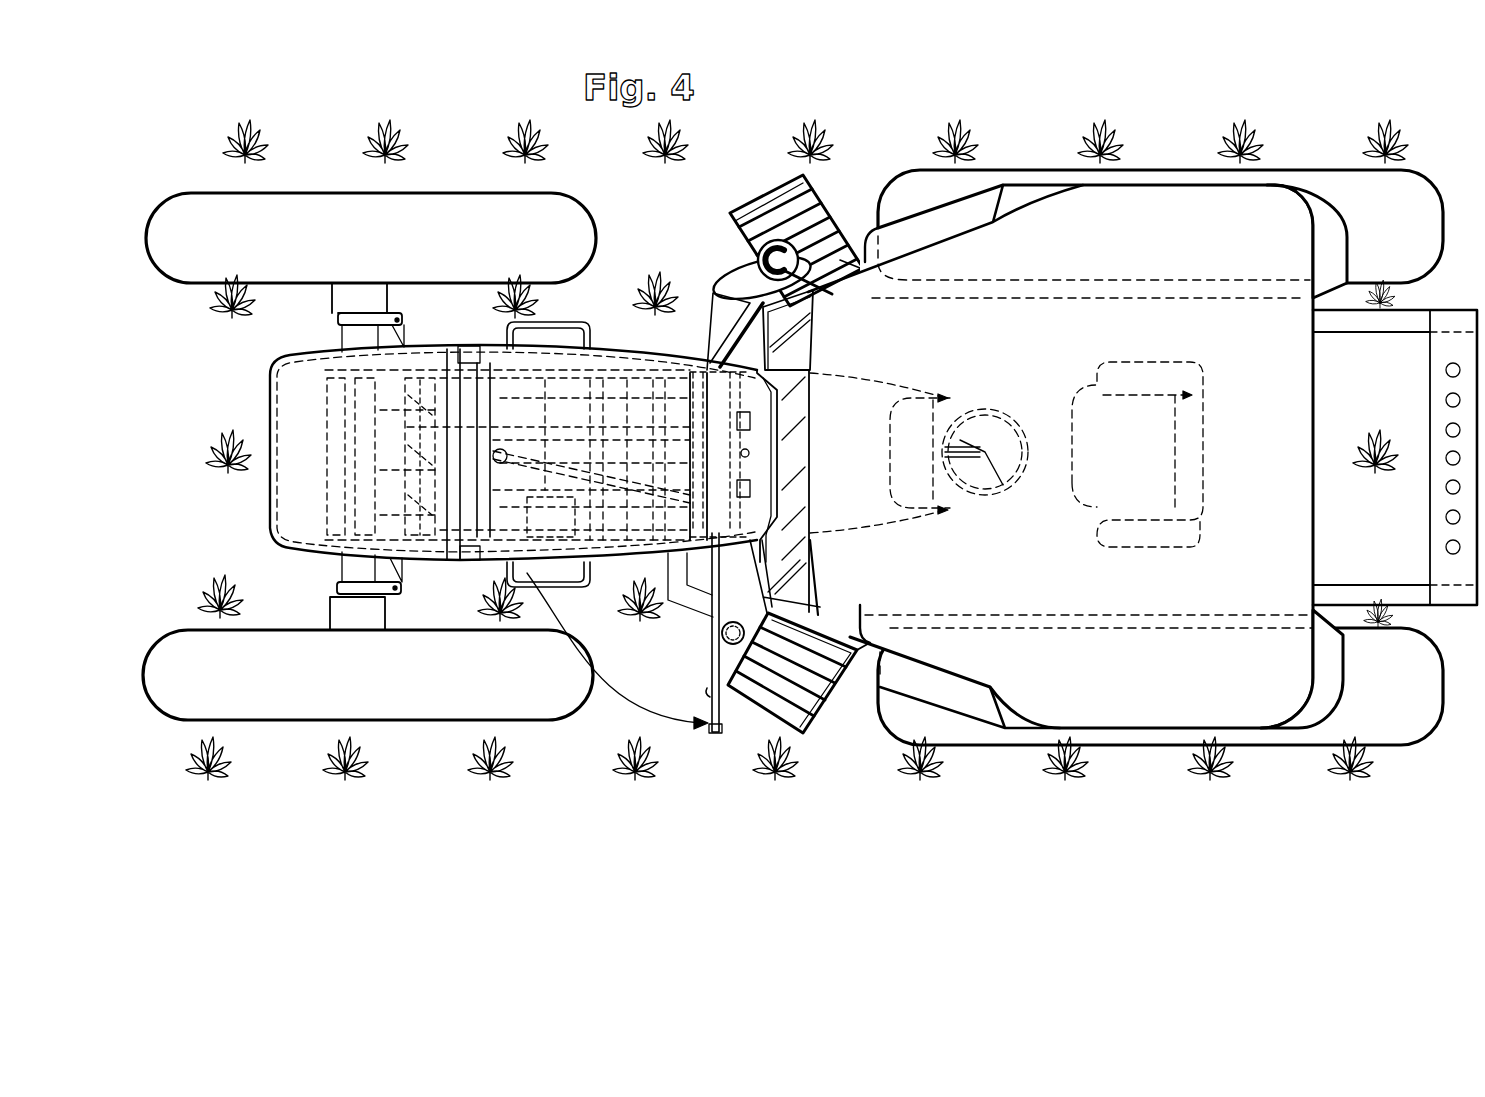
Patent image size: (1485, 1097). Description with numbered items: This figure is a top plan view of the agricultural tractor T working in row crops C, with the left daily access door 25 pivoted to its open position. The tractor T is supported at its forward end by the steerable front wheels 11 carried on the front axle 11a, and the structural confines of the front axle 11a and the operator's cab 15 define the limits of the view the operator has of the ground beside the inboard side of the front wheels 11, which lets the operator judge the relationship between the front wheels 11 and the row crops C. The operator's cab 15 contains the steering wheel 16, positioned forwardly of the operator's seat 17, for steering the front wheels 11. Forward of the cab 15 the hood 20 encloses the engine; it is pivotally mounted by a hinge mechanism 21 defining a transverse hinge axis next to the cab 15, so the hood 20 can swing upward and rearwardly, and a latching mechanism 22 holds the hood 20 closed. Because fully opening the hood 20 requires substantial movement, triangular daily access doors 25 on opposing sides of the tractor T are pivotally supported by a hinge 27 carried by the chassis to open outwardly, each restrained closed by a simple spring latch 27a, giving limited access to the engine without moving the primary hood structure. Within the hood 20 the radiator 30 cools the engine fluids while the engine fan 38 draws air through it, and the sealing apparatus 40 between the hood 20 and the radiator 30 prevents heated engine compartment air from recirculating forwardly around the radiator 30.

The front wheels 11 is at (320, 207).
The front axle 11a is at (340, 333).
The operator's cab 15 is at (1307, 555).
The steering wheel 16 is at (1020, 423).
The operator's seat 17 is at (1203, 420).
The hood 20 is at (268, 503).
The hinge mechanism 21 is at (767, 377).
The latching mechanism 22 is at (505, 450).
The daily access doors 25 is at (723, 707).
The hinge 27 is at (740, 548).
The spring latch 27a is at (714, 734).
The radiator 30 is at (373, 390).
The engine fan 38 is at (428, 383).
The sealing apparatus 40 is at (333, 558).
The tractor T is at (1143, 183).
The row crops C is at (1285, 132).